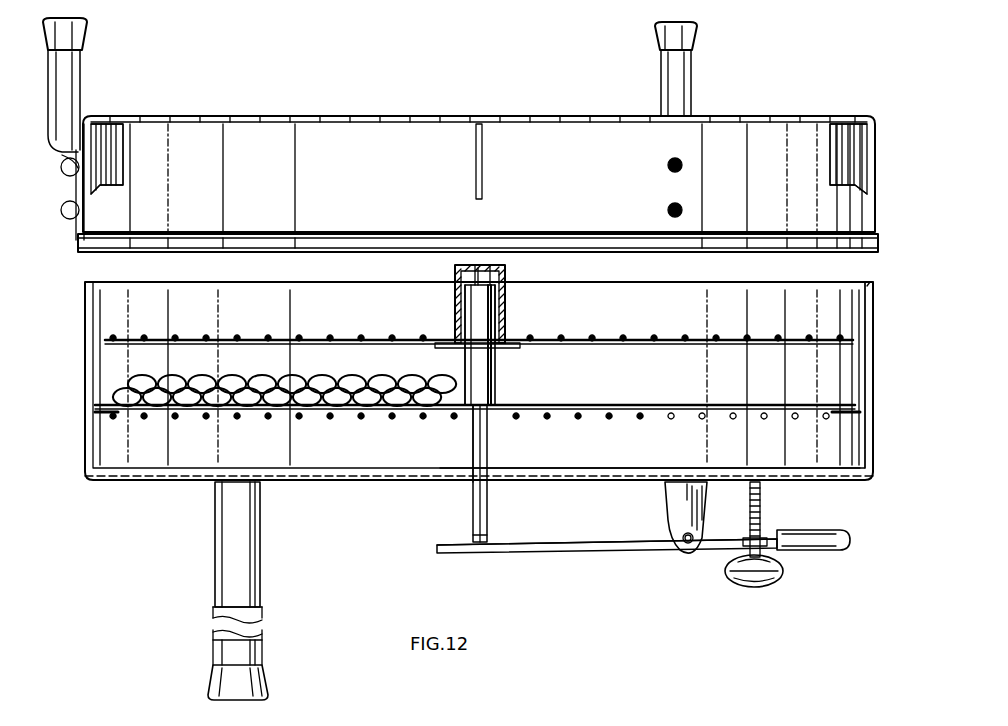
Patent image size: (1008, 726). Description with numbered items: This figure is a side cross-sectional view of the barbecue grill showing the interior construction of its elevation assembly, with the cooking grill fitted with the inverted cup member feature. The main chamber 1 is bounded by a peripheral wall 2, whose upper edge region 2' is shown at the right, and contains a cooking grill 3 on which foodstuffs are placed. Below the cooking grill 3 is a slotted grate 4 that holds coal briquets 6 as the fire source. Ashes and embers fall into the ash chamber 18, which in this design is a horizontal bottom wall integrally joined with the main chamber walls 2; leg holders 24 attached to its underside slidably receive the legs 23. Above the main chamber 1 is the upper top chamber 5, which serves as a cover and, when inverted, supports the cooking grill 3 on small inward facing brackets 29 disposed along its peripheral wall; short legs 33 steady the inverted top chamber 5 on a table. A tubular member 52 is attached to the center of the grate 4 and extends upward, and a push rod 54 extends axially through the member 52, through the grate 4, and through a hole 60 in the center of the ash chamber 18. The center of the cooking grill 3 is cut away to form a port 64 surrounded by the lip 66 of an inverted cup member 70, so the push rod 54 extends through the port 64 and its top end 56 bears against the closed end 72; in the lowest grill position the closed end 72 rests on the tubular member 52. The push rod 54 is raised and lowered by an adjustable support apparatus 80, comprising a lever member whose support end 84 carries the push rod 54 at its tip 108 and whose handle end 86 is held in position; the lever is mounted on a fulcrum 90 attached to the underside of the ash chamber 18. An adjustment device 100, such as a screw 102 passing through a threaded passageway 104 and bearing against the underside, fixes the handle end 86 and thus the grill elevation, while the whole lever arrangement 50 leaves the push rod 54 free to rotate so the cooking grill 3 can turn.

The main chamber 1 is at (795, 290).
The peripheral wall 2 is at (881, 375).
The upper wall edge 2' is at (884, 278).
The cooking grill 3 is at (732, 342).
The slotted grate 4 is at (622, 404).
The upper top chamber 5 is at (425, 100).
The coal briquets 6 is at (325, 372).
The ash chamber 18 is at (596, 482).
The legs 23 is at (264, 630).
The leg holders 24 is at (236, 492).
The inward facing brackets 29 is at (125, 166).
The short legs 33 is at (80, 90).
The actuating bar assembly 50 is at (582, 568).
The tubular member 52 is at (497, 380).
The push rod 54 is at (487, 508).
The top end 56 is at (505, 278).
The hole 60 is at (472, 484).
The port 64 is at (499, 346).
The lip 66 is at (505, 335).
The inverted cup member 70 is at (455, 302).
The closed end 72 is at (455, 270).
The adjustable support apparatus 80 is at (684, 574).
The support end 84 is at (449, 556).
The handle end 86 is at (826, 552).
The fulcrum 90 is at (675, 498).
The adjustment device 100 is at (756, 598).
The screw 102 is at (750, 505).
The threaded passageway 104 is at (762, 540).
The bar end 108 is at (472, 534).